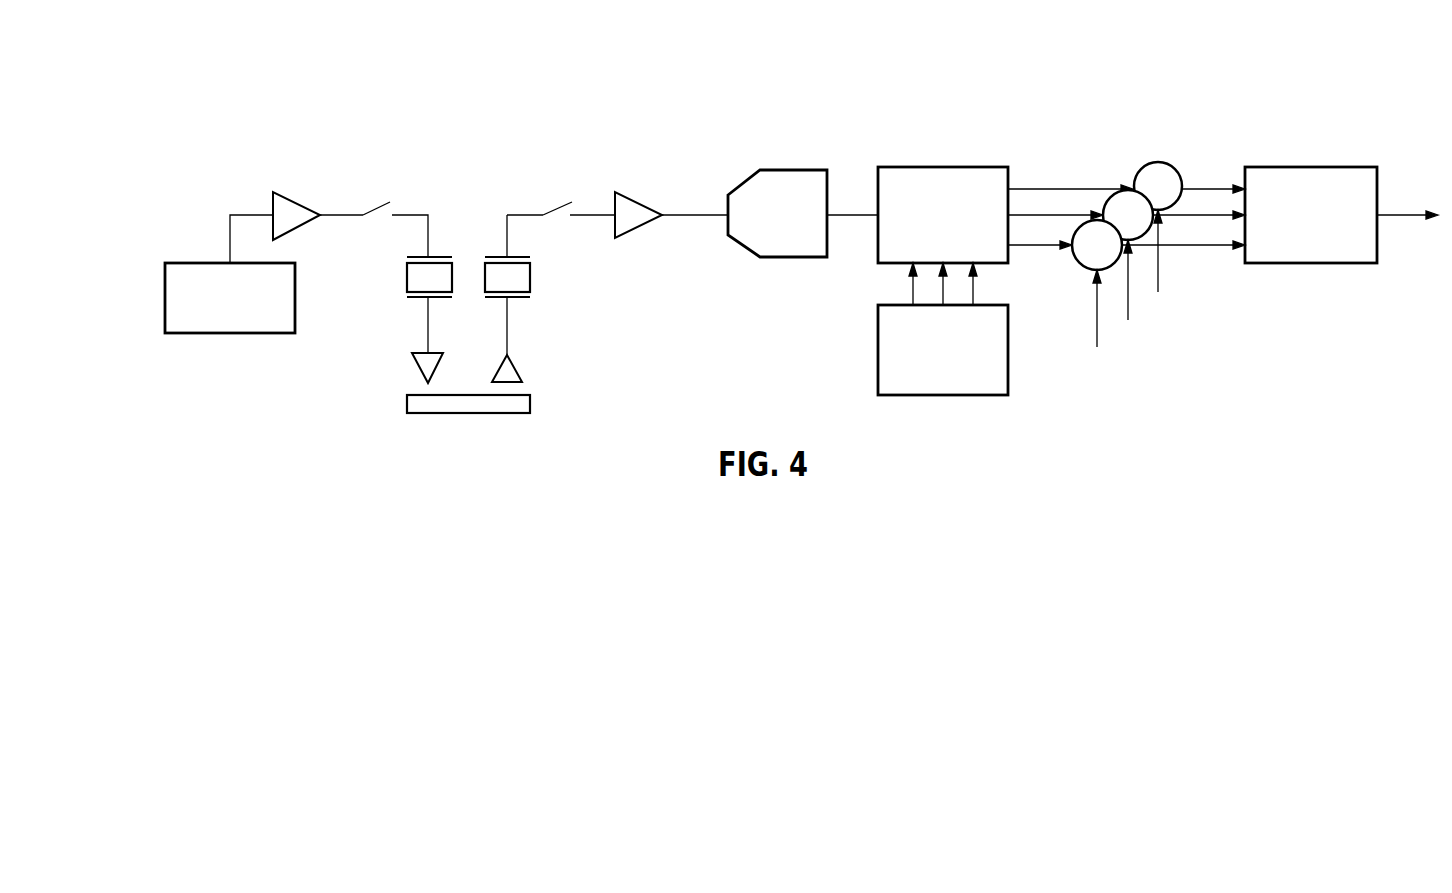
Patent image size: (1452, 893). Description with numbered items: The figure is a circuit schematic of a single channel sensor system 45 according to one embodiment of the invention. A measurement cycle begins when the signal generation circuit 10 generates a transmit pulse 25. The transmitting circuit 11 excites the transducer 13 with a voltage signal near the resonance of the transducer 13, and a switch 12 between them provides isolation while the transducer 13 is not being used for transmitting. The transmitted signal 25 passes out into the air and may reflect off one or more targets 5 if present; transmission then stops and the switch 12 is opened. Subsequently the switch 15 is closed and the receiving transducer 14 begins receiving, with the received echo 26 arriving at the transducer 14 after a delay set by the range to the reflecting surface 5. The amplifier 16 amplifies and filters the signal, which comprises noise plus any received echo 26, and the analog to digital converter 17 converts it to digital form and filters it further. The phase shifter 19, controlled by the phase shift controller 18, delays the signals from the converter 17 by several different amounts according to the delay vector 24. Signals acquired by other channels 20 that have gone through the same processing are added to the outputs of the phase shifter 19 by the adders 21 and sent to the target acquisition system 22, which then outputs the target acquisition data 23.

The single channel sensor system 45 is at (258, 86).
The signal generation circuit 10 is at (232, 333).
The transmitting circuit 11 is at (293, 197).
The switch 12 is at (380, 202).
The transducer 13 is at (407, 278).
The receiving transducer 14 is at (530, 277).
The switch 15 is at (562, 203).
The amplifier 16 is at (637, 200).
The analog to digital converter 17 is at (745, 250).
The phase shift controller 18 is at (877, 375).
The phase shifter 19 is at (988, 165).
The other channels 20 is at (1097, 327).
The adders 21 is at (1153, 163).
The target acquisition system 22 is at (1295, 165).
The target acquisition data 23 is at (1398, 217).
The delay vector 24 is at (913, 292).
The transmit pulse 25 is at (428, 330).
The received echo 26 is at (507, 333).
The target 5 is at (480, 413).